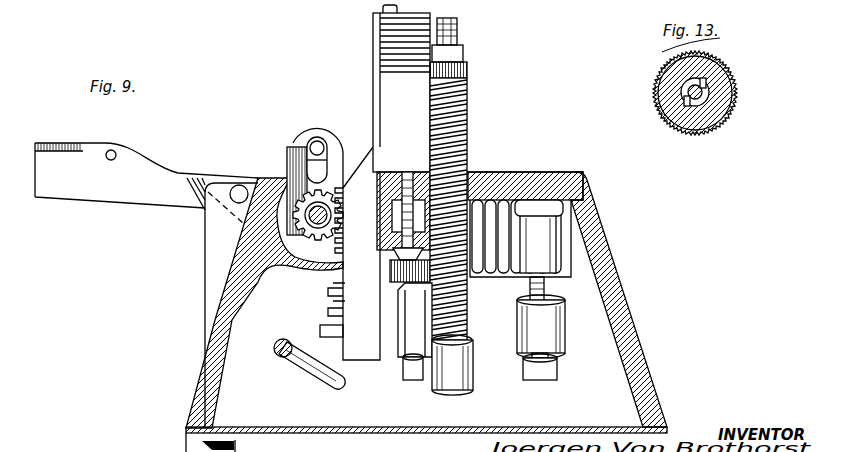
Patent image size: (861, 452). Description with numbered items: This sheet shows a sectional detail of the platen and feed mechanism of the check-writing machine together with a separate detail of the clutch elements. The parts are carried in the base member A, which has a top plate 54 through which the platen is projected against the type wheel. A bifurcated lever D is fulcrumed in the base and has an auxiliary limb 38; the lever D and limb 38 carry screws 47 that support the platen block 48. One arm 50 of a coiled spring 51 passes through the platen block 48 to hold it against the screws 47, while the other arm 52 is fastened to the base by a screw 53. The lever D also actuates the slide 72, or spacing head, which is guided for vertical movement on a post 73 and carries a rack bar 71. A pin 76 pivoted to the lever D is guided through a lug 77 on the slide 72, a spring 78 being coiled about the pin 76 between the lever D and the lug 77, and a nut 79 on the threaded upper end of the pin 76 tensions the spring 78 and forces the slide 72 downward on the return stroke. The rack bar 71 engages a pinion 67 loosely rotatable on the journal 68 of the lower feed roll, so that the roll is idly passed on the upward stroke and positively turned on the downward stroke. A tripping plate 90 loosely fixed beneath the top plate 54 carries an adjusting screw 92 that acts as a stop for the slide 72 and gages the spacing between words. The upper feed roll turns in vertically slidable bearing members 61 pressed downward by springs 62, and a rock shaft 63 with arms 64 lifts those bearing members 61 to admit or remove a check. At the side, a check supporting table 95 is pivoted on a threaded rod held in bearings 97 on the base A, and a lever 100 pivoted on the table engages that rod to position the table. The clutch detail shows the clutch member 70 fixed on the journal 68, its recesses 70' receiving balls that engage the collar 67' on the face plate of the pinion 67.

In FIG. 9, the base member A is at (642, 338).
In FIG. 9, the lever 100 is at (174, 192).
In FIG. 9, the check supporting table 95 is at (200, 178).
In FIG. 9, the bearings 97 is at (207, 285).
In FIG. 9, the pinion 67 is at (274, 191).
In FIG. 9, the bearing members 61 is at (300, 140).
In FIG. 9, the journal 68 is at (300, 224).
In FIG. 9, the rack bar 71 is at (370, 356).
In FIG. 9, the springs 62 is at (330, 306).
In FIG. 9, the rock shaft 63 is at (277, 353).
In FIG. 9, the arms 64 is at (323, 369).
In FIG. 9, the slide 72 is at (372, 76).
In FIG. 9, the post 73 is at (383, 12).
In FIG. 9, the pin 76 is at (460, 32).
In FIG. 9, the nut 79 is at (462, 53).
In FIG. 9, the lug 77 is at (468, 73).
In FIG. 9, the spring 78 is at (465, 120).
In FIG. 9, the adjusting screw 92 is at (408, 172).
In FIG. 9, the tripping plate 90 is at (478, 169).
In FIG. 9, the top plate 54 is at (537, 169).
In FIG. 9, the spring arm 50 is at (477, 277).
In FIG. 9, the coiled spring 51 is at (578, 240).
In FIG. 9, the screw 53 is at (570, 215).
In FIG. 9, the spring arm 52 is at (565, 204).
In FIG. 9, the platen block 48 is at (580, 273).
In FIG. 9, the auxiliary limb 38 is at (575, 302).
In FIG. 9, the lever D is at (474, 379).
In FIG. 9, the screws 47 is at (557, 371).
In FIG. 13, the clutch member 70 is at (695, 105).
In FIG. 13, the recesses 70' is at (712, 93).
In FIG. 13, the collar 67' is at (720, 108).